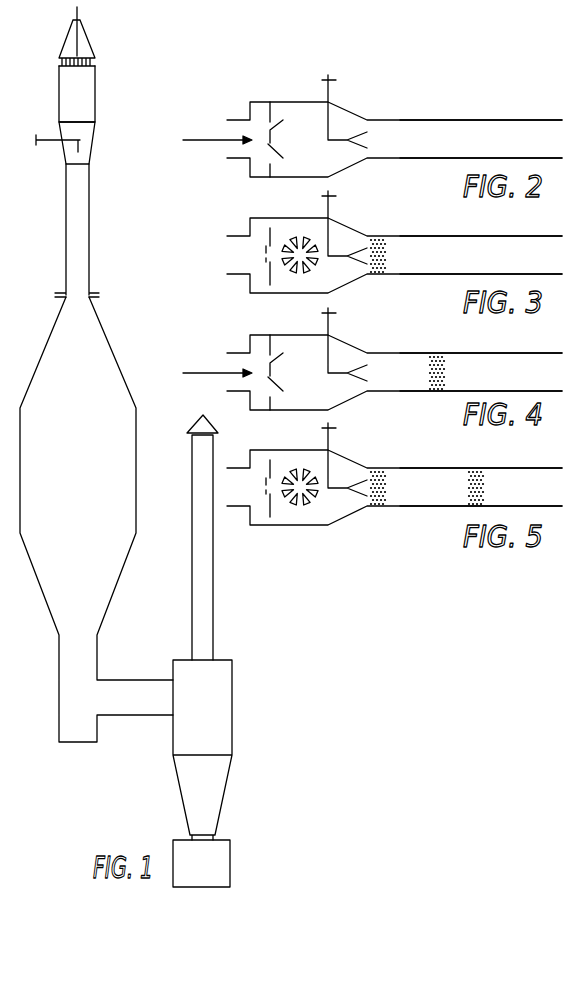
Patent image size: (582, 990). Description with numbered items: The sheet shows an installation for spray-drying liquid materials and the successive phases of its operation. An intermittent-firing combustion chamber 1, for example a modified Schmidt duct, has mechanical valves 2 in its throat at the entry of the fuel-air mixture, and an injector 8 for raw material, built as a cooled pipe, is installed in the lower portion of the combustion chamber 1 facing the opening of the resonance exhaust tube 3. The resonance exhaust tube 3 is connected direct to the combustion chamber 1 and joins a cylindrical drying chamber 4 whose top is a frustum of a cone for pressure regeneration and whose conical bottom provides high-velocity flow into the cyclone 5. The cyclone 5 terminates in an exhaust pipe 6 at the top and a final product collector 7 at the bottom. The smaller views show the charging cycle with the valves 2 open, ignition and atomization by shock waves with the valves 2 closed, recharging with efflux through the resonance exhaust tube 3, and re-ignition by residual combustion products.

In FIG. 1, the intermittent-firing combustion chamber 1 is at (85, 98).
In FIG. 2, the intermittent-firing combustion chamber 1 is at (297, 123).
In FIG. 3, the intermittent-firing combustion chamber 1 is at (394, 238).
In FIG. 4, the intermittent-firing combustion chamber 1 is at (394, 355).
In FIG. 5, the intermittent-firing combustion chamber 1 is at (394, 472).
In FIG. 1, the mechanical valves 2 is at (85, 53).
In FIG. 2, the mechanical valves 2 is at (272, 132).
In FIG. 3, the mechanical valves 2 is at (251, 276).
In FIG. 4, the mechanical valves 2 is at (261, 391).
In FIG. 5, the mechanical valves 2 is at (257, 511).
In FIG. 1, the resonance exhaust tube 3 is at (86, 200).
In FIG. 2, the resonance exhaust tube 3 is at (427, 130).
In FIG. 3, the resonance exhaust tube 3 is at (466, 239).
In FIG. 4, the resonance exhaust tube 3 is at (481, 355).
In FIG. 5, the resonance exhaust tube 3 is at (466, 470).
In FIG. 1, the drying chamber 4 is at (88, 373).
In FIG. 1, the cyclone 5 is at (185, 667).
In FIG. 1, the exhaust pipe 6 is at (202, 476).
In FIG. 1, the final product collector 7 is at (183, 852).
In FIG. 1, the injector 8 is at (78, 136).
In FIG. 2, the injector 8 is at (328, 80).
In FIG. 3, the injector 8 is at (349, 227).
In FIG. 4, the injector 8 is at (349, 338).
In FIG. 5, the injector 8 is at (344, 457).